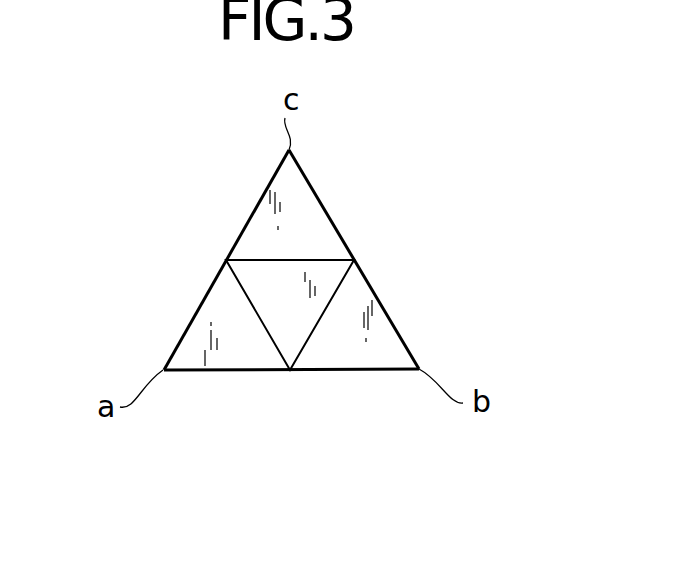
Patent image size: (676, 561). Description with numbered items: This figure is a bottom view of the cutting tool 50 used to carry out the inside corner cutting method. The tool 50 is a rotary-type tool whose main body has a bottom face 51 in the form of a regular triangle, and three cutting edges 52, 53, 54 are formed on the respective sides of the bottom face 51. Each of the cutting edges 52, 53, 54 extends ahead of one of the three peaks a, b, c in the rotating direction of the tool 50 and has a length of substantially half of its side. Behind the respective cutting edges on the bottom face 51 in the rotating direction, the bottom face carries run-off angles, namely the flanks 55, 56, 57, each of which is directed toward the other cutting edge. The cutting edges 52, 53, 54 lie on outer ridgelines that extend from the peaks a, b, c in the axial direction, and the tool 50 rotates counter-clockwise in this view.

The cutting tool 50 is at (328, 294).
The bottom face 51 is at (283, 308).
The cutting edge 52 is at (228, 373).
The cutting edge 53 is at (388, 305).
The cutting edge 54 is at (258, 203).
The flank 55 is at (223, 315).
The flank 56 is at (353, 332).
The flank 57 is at (297, 208).